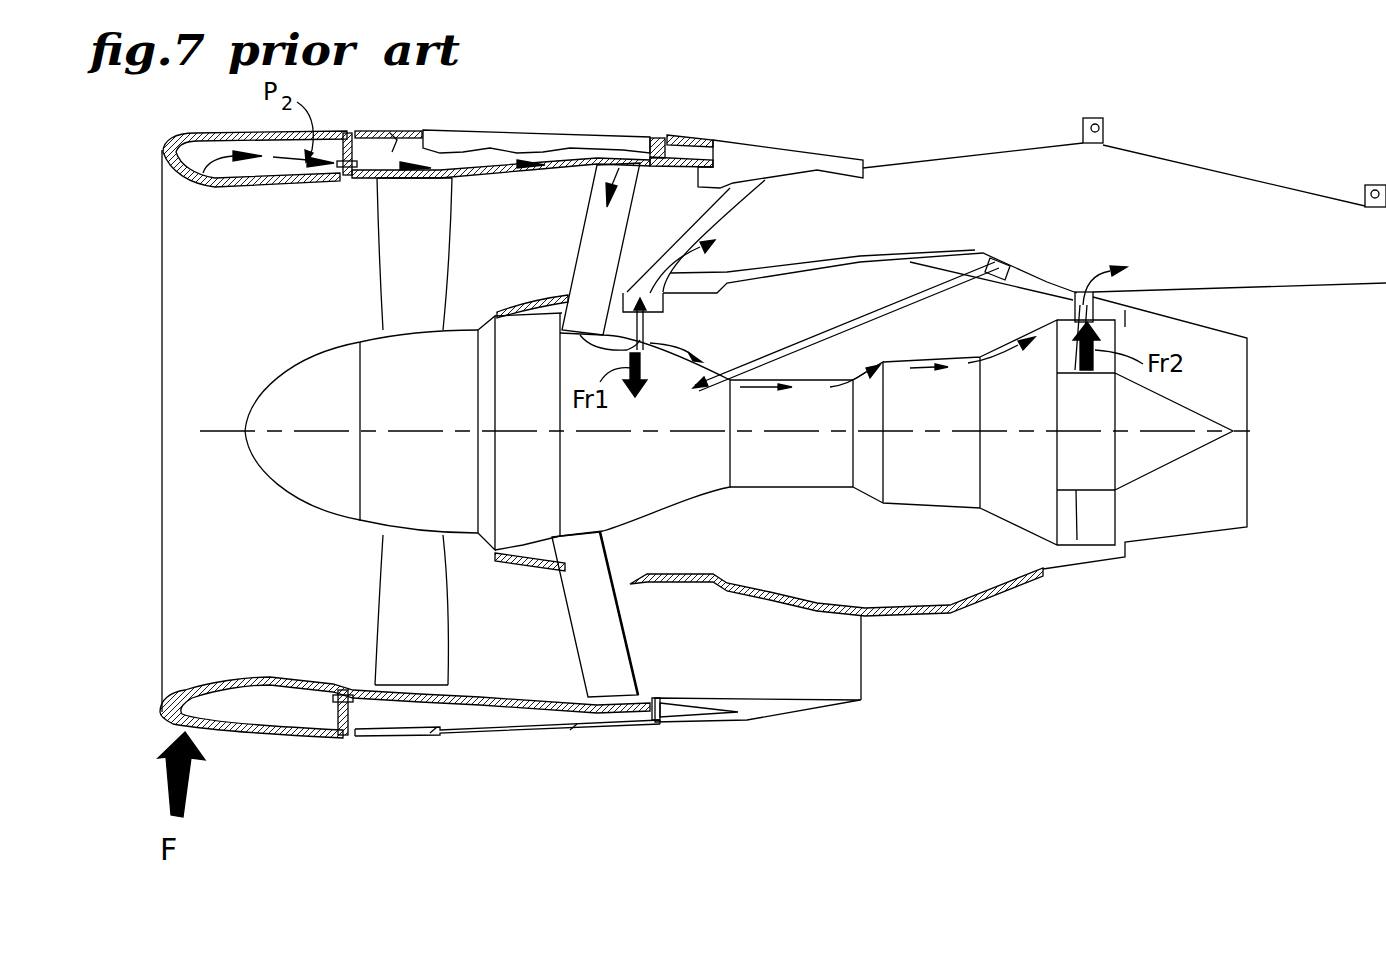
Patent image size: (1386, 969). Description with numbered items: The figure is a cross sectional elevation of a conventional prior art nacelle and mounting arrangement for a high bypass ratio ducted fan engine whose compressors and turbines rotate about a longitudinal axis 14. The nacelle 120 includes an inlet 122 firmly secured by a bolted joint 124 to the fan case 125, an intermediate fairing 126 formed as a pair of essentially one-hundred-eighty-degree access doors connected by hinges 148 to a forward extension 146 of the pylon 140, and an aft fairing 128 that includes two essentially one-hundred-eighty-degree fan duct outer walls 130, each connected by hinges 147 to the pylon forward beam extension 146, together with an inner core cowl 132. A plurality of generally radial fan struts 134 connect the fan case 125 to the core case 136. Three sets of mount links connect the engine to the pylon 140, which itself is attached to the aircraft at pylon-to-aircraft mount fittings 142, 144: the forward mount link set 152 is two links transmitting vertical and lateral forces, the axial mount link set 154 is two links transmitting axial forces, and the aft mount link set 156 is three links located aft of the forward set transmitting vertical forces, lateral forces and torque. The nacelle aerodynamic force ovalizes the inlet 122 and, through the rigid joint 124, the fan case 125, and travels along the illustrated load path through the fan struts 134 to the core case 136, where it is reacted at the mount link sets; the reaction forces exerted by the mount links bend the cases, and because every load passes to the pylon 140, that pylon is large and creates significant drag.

The longitudinal axis 14 is at (225, 430).
The nacelle 120 is at (633, 790).
The inlet 122 is at (193, 683).
The bolted joint 124 is at (333, 700).
The fan case 125 is at (473, 700).
The intermediate fairing 126 is at (433, 737).
The aft fairing 128 is at (860, 713).
The fan duct outer walls 130 is at (750, 158).
The inner core cowl 132 is at (773, 597).
The fan struts 134 is at (580, 218).
The core case 136 is at (688, 505).
The pylon 140 is at (1285, 254).
The pylon-to-aircraft mount fitting 142 is at (1105, 135).
The pylon-to-aircraft mount fitting 144 is at (1373, 183).
The forward extension of the pylon 146 is at (662, 137).
The hinges 147 is at (687, 150).
The hinges 148 is at (387, 130).
The forward mount link set 152 is at (645, 337).
The axial mount link set 154 is at (843, 333).
The aft mount link set 156 is at (1068, 330).